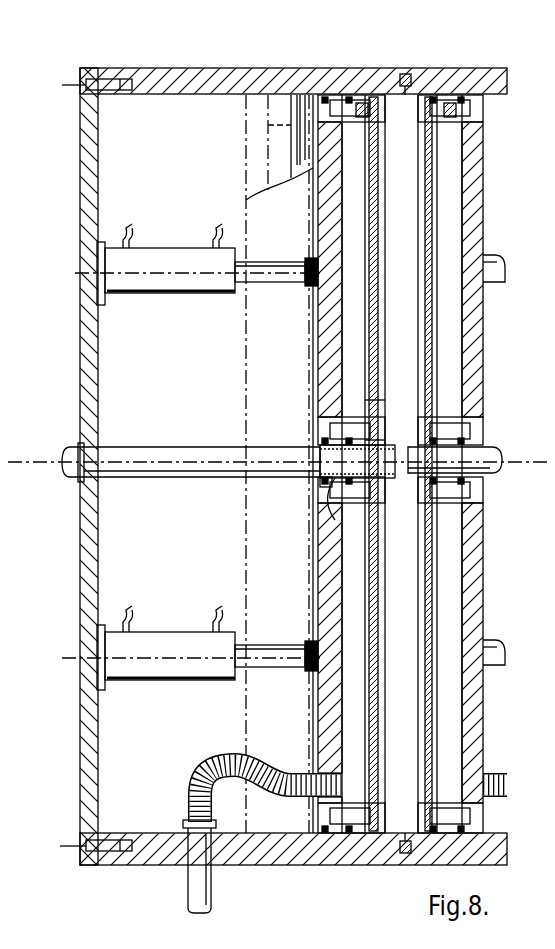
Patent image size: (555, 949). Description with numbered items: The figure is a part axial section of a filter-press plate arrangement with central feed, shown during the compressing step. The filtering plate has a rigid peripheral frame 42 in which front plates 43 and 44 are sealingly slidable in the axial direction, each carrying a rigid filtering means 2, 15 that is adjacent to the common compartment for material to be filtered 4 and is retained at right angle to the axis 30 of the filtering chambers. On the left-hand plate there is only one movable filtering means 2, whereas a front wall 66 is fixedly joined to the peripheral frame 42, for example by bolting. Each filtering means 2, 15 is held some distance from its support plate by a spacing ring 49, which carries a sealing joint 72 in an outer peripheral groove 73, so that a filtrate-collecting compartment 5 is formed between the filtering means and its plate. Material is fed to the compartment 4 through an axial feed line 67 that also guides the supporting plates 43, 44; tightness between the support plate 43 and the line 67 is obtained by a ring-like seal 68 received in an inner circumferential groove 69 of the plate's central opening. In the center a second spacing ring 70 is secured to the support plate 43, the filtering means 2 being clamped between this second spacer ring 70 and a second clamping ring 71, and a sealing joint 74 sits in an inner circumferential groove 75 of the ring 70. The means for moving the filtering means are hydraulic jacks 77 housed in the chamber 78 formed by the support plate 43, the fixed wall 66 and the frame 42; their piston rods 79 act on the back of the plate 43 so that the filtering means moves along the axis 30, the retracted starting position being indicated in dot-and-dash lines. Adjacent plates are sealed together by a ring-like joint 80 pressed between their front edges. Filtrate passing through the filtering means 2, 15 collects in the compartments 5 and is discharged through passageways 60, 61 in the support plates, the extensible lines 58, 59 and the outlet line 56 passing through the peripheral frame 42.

The filtering means 2 is at (373, 133).
The compartment for the material to be filtered 4 is at (408, 249).
The filtrate-collecting compartment 5 is at (363, 249).
The filtering means 15 is at (432, 97).
The axis 30 is at (177, 463).
The peripheral frame 42 is at (200, 76).
The front plate 43 is at (243, 345).
The front plate 44 is at (478, 305).
The spacing ring 49 is at (368, 98).
The outlet line 56 is at (213, 893).
The extensible line 58 is at (250, 762).
The extensible line 59 is at (490, 775).
The passageway 60 is at (354, 750).
The passageway 61 is at (449, 750).
The front wall 66 is at (82, 356).
The axial feed line 67 is at (108, 447).
The ring-like seal 68 is at (325, 478).
The inner circumferential groove 69 is at (323, 485).
The second spacing ring 70 is at (375, 400).
The second clamping ring 71 is at (380, 440).
The sealing joint 72 is at (356, 97).
The outer peripheral groove 73 is at (345, 97).
The sealing joint 74 is at (355, 525).
The inner circumferential groove 75 is at (355, 566).
The jack 77 is at (155, 248).
The chamber 78 is at (180, 164).
The piston rod 79 is at (255, 264).
The ring-like joint 80 is at (404, 98).